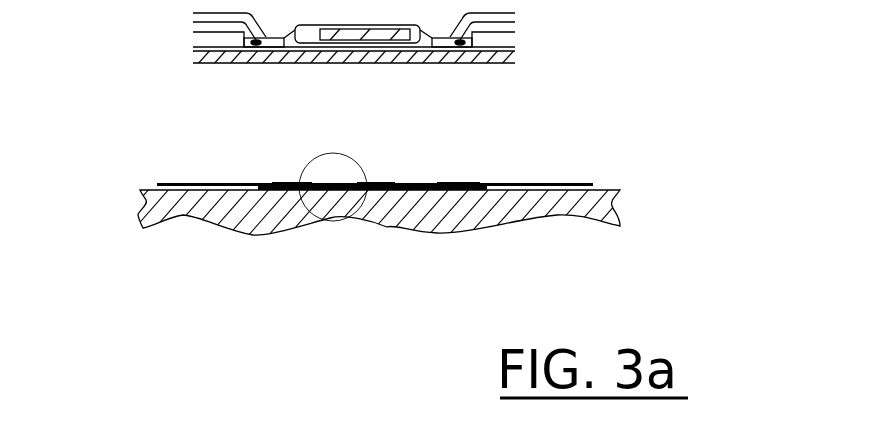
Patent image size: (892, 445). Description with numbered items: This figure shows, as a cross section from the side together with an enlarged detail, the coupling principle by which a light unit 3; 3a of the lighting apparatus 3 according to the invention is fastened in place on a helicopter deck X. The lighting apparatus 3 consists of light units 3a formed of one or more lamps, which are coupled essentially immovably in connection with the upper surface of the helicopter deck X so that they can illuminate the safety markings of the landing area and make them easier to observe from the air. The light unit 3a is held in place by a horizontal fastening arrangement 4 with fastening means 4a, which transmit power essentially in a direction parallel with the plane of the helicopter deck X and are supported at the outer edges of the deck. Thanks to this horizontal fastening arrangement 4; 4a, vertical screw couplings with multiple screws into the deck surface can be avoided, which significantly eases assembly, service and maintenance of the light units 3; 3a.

The horizontal fastening arrangement 4 is at (405, 131).
The fastening means 4a is at (220, 181).
The lighting apparatus 3 is at (434, 139).
The light unit 3a is at (461, 179).
The helicopter deck X is at (582, 203).